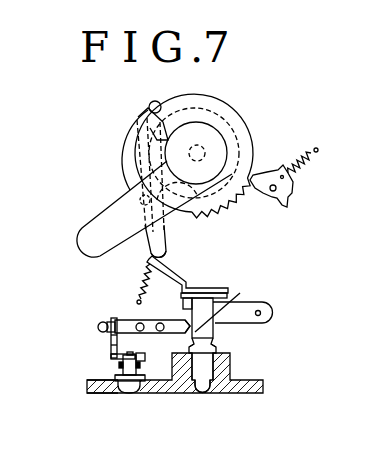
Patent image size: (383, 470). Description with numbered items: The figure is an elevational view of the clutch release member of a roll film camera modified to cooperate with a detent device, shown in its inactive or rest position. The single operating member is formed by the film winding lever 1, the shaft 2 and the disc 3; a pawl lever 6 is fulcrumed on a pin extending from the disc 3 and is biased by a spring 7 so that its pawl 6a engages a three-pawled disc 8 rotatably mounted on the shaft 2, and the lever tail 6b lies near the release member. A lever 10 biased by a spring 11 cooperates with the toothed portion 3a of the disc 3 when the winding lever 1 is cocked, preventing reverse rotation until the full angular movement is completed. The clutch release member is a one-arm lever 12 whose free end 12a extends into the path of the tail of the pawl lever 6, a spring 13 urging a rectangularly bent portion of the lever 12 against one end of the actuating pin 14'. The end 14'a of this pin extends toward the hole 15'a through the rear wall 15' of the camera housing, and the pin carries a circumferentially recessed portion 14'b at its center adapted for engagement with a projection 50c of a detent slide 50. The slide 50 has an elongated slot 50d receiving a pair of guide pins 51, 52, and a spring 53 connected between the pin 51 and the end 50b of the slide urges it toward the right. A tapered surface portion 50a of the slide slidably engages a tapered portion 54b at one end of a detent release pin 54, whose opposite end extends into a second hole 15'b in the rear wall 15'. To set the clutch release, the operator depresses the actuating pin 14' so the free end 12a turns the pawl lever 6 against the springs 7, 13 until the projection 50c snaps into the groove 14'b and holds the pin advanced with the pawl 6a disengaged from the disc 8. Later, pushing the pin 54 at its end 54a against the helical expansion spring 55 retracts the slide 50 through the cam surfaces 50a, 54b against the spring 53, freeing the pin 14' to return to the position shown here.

The film winding lever 1 is at (92, 240).
The shaft 2 is at (205, 153).
The disc 3 is at (224, 112).
The toothed portion 3a is at (233, 202).
The pawl lever 6 is at (168, 254).
The pawl 6a is at (148, 120).
The arm end 6b is at (174, 256).
The spring 7 is at (127, 160).
The three-pawled disc 8 is at (238, 128).
The lever 10 is at (295, 188).
The spring 11 is at (300, 155).
The one-arm lever 12 is at (273, 308).
The free end of lever 12 12a is at (175, 275).
The spring 13 is at (145, 280).
The actuating pin 14' is at (245, 335).
The end of actuating pin 14'a is at (192, 393).
The circumferentially recessed portion 14'b is at (237, 358).
The rear wall 15' is at (202, 376).
The hole 15'a is at (227, 407).
The second hole 15'b is at (92, 407).
The detent slide 50 is at (113, 350).
The tapered surface portion 50a is at (117, 350).
The end of slide 50b is at (113, 338).
The projection 50c is at (232, 303).
The elongated slot 50d is at (167, 312).
The guide pin 51 is at (132, 318).
The guide pin 52 is at (148, 355).
The spring 53 is at (114, 318).
The detent release pin 54 is at (130, 358).
The end of pin 54 54a is at (131, 393).
The tapered portion 54b is at (117, 356).
The helical expansion spring 55 is at (115, 374).